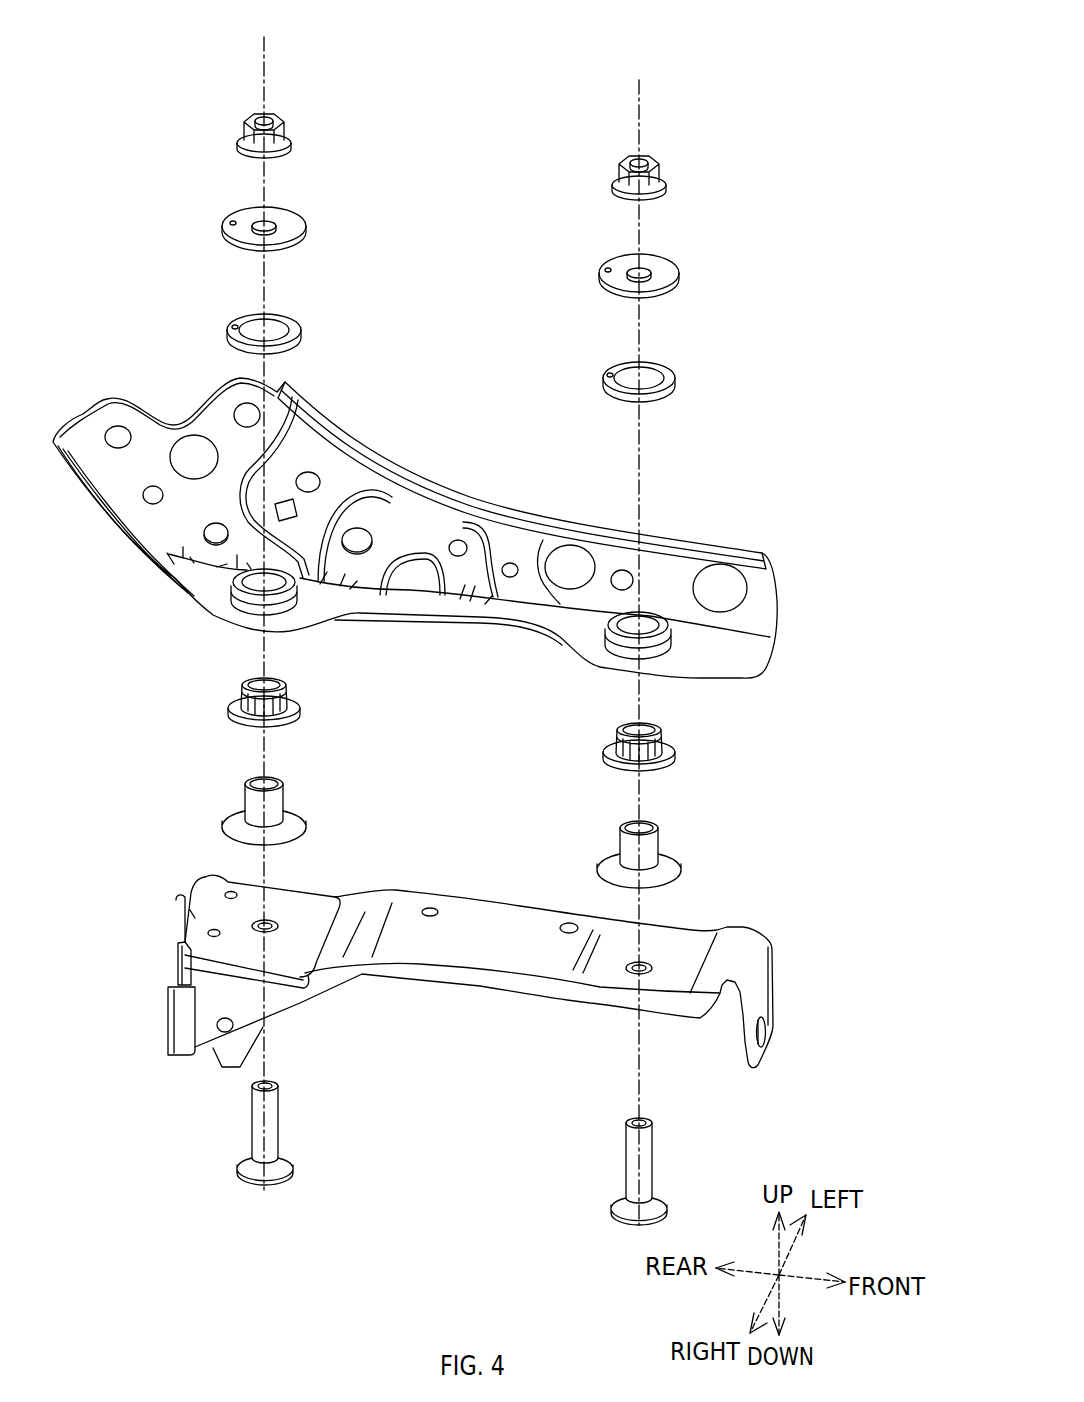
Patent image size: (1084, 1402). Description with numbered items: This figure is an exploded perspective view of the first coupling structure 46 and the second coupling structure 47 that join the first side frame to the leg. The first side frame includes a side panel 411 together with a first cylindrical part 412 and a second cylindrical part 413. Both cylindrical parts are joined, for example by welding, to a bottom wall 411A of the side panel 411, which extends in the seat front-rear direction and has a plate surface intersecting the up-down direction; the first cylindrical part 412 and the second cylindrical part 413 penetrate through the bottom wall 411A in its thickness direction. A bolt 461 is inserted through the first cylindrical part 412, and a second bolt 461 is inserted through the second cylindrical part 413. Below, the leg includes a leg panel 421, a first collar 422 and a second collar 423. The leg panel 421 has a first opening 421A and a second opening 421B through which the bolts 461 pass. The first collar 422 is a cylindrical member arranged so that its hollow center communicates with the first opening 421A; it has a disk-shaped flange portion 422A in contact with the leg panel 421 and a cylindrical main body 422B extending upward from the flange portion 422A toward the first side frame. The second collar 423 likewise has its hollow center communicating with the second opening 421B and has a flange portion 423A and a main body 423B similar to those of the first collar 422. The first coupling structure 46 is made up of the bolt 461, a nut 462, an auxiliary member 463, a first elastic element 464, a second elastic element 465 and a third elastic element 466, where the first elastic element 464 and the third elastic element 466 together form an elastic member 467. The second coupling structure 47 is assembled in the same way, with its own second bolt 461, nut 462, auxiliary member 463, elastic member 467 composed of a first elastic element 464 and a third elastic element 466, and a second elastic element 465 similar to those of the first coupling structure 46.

The first coupling structure 46 is at (203, 71).
The second coupling structure 47 is at (710, 104).
The side panel 411 is at (471, 549).
The bottom wall 411A is at (747, 659).
The first cylindrical part 412 is at (222, 600).
The second cylindrical part 413 is at (655, 647).
The leg panel 421 is at (521, 980).
The first opening 421A is at (278, 921).
The second opening 421B is at (624, 962).
The first collar 422 is at (270, 821).
The flange portion 422A is at (292, 823).
The cylindrical main body 422B is at (280, 802).
The second collar 423 is at (648, 853).
The flange portion 423A is at (615, 863).
The main body 423B is at (625, 840).
The bolt 461 is at (267, 1123).
The nut 462 is at (247, 122).
The auxiliary member 463 is at (243, 215).
The first elastic element 464 is at (292, 715).
The second elastic element 465 is at (238, 327).
The third elastic element 466 is at (290, 699).
The elastic member 467 is at (455, 734).